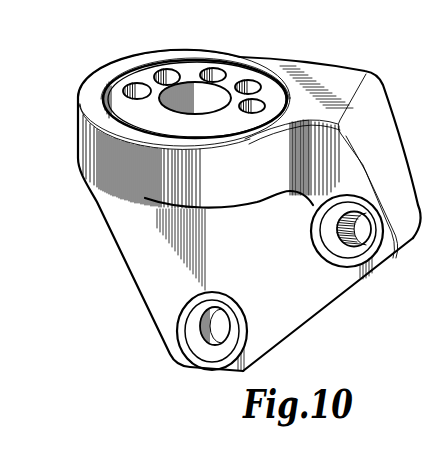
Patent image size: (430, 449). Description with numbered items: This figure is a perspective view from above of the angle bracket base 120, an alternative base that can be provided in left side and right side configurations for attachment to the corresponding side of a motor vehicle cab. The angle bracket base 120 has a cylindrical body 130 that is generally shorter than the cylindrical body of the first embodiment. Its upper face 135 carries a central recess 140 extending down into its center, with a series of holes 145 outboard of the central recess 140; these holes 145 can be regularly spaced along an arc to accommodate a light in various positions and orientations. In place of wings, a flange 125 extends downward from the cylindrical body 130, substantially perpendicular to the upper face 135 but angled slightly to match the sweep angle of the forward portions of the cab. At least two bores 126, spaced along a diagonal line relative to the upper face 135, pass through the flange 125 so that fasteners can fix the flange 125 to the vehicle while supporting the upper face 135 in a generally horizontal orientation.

The angle bracket base 120 is at (317, 331).
The flange 125 is at (281, 292).
The bores 126 is at (213, 331).
The cylindrical body 130 is at (118, 177).
The upper face 135 is at (330, 73).
The central recess 140 is at (197, 90).
The holes 145 is at (167, 77).